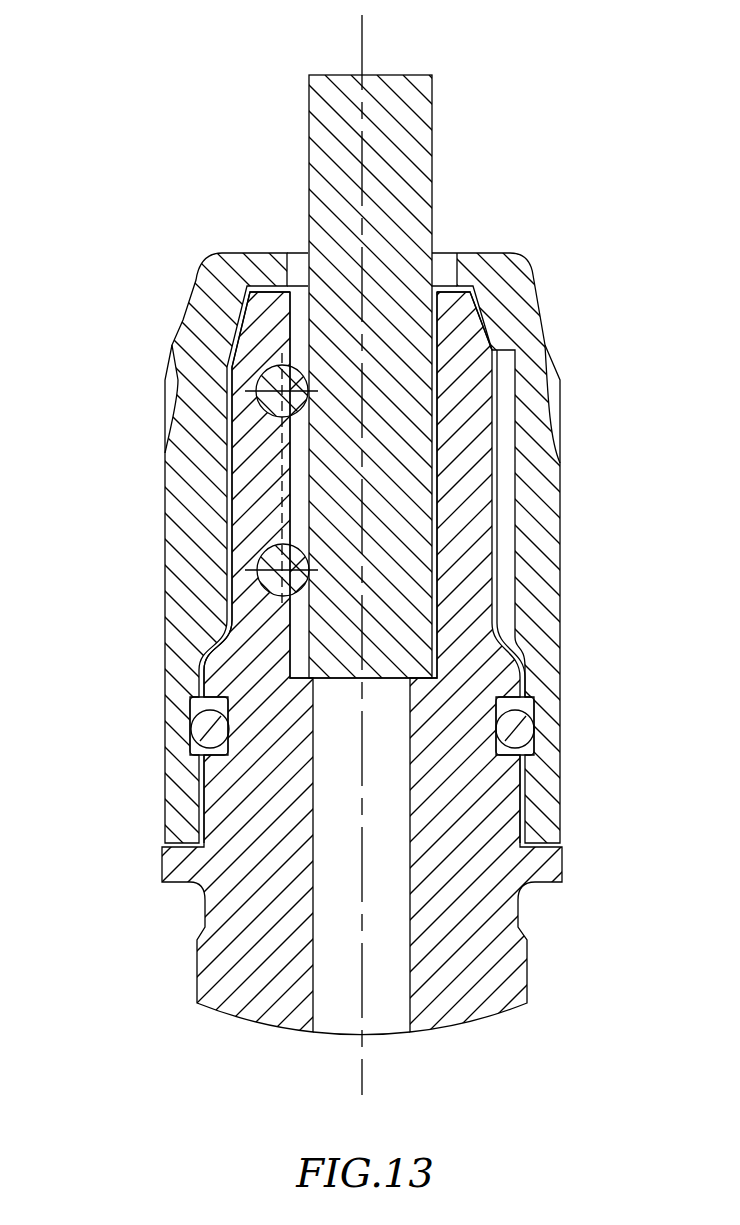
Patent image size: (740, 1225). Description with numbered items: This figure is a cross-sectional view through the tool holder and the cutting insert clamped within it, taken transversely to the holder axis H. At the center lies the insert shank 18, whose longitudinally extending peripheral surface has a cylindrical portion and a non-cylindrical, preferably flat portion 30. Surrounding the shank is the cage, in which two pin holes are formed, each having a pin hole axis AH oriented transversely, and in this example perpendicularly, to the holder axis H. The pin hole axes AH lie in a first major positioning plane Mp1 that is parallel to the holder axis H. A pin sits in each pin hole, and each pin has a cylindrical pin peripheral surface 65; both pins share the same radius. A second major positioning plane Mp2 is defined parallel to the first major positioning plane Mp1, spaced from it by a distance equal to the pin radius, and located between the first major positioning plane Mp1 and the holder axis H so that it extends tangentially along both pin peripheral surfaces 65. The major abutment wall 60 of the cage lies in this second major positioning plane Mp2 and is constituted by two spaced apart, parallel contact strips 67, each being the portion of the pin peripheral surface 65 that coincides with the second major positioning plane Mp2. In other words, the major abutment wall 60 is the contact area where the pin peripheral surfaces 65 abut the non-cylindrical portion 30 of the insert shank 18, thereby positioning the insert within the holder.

The insert shank 18 is at (411, 202).
The major abutment wall 60 is at (370, 555).
The contact strip 67 is at (305, 386).
The non-cylindrical portion 30 is at (305, 458).
The second major positioning plane Mp2 is at (363, 485).
The first major positioning plane Mp1 is at (285, 492).
The pin peripheral surface 65 is at (262, 388).
The pin hole axis AH is at (262, 578).
The holder axis H is at (362, 40).